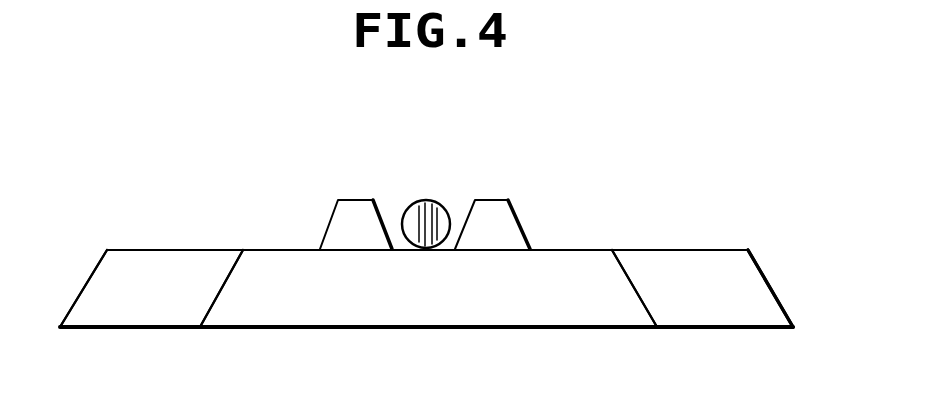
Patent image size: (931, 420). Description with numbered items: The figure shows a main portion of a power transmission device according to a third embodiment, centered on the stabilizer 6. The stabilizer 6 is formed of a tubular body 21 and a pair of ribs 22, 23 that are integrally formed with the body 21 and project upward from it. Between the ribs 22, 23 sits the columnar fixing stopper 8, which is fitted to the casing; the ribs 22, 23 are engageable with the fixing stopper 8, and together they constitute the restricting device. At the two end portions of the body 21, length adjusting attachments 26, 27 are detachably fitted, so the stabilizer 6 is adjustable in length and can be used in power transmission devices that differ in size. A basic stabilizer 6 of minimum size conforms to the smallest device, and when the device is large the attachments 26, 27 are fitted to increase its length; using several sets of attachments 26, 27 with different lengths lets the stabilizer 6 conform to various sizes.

The stabilizer 6 is at (764, 270).
The fixing stopper 8 is at (443, 203).
The body 21 is at (453, 300).
The rib 22 is at (358, 210).
The rib 23 is at (493, 217).
The length adjusting attachment 26 is at (133, 298).
The length adjusting attachment 27 is at (722, 302).